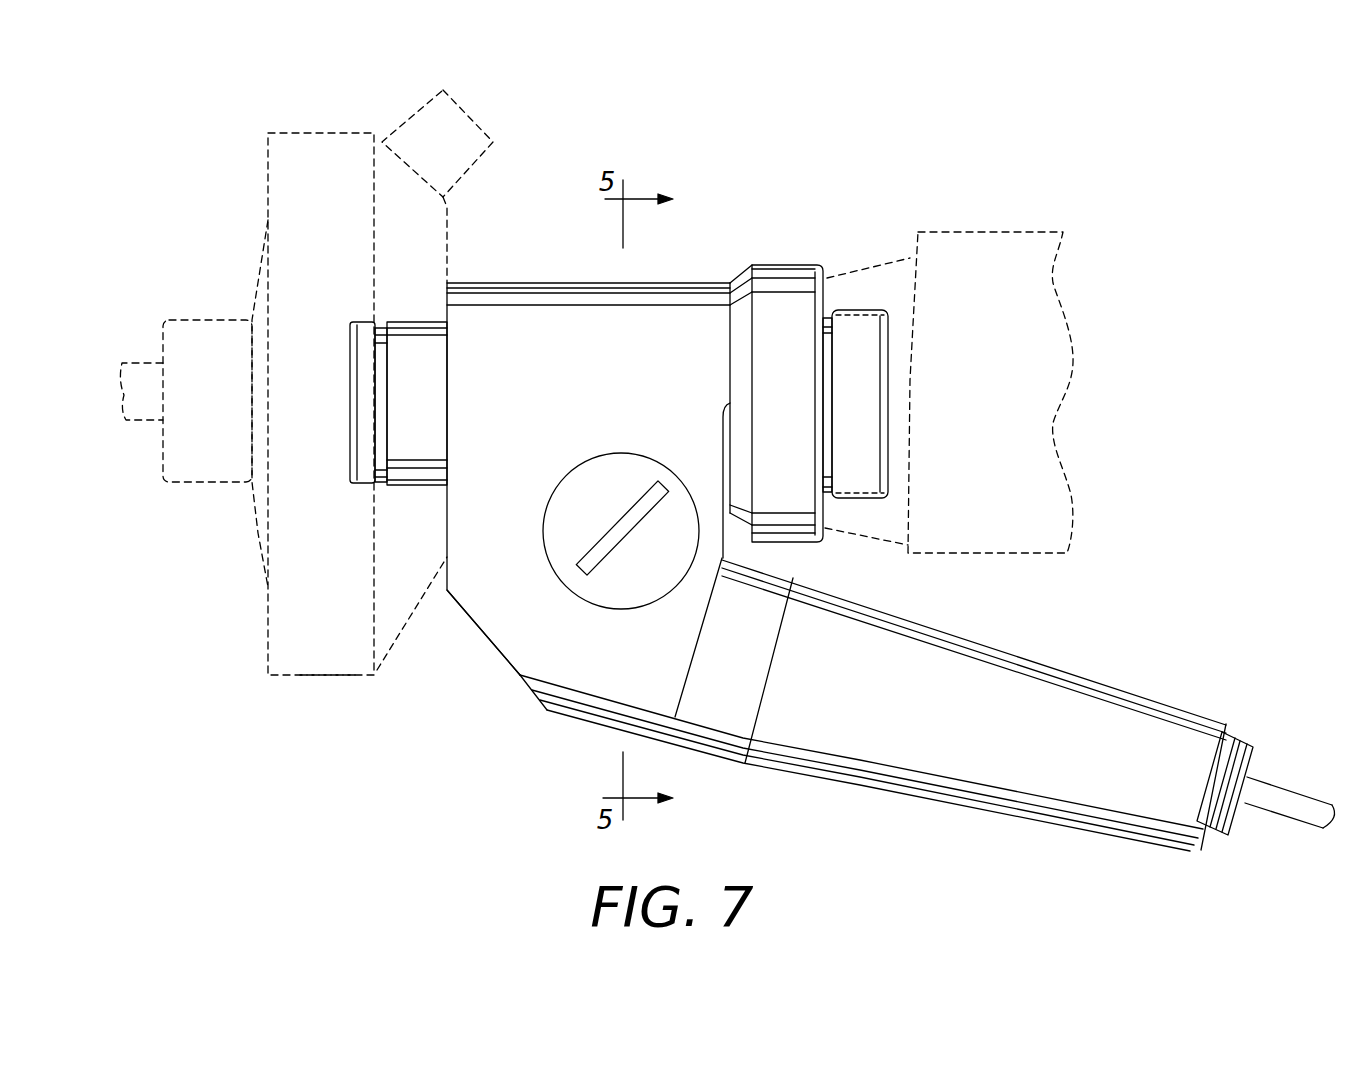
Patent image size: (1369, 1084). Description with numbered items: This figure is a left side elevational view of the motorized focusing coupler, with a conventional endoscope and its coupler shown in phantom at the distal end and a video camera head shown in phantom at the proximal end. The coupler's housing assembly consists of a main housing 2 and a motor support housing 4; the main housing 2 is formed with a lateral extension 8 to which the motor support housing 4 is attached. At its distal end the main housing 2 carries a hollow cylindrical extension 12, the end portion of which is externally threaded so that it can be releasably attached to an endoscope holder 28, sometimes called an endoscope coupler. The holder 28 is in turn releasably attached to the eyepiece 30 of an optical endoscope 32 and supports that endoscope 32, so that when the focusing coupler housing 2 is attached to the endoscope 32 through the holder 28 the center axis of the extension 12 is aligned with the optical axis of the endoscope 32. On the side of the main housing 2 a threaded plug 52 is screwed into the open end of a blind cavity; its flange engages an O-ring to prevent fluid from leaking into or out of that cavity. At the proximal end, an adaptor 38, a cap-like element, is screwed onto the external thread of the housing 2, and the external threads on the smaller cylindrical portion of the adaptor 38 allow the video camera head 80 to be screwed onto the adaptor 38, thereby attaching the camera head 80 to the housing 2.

The main housing 2 is at (650, 283).
The motor support housing 4 is at (985, 634).
The lateral extension 8 is at (493, 640).
The hollow cylindrical extension 12 is at (412, 320).
The endoscope holder 28 is at (339, 696).
The eyepiece 30 is at (256, 537).
The optical endoscope 32 is at (186, 377).
The adaptor 38 is at (778, 265).
The threaded plug 52 is at (553, 485).
The video camera head 80 is at (990, 228).